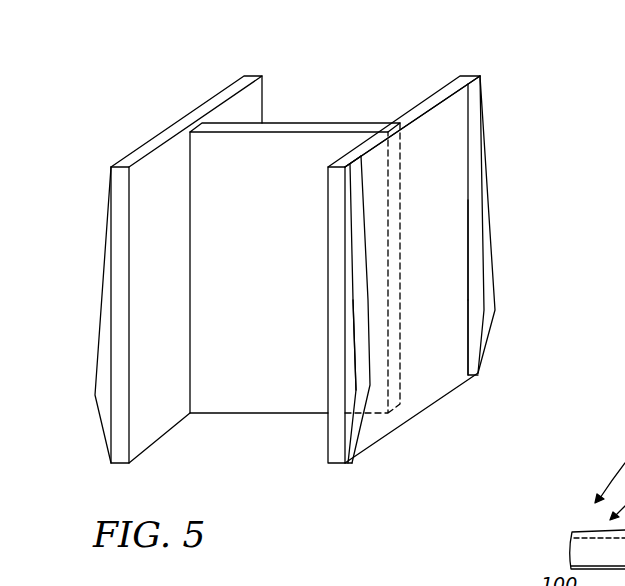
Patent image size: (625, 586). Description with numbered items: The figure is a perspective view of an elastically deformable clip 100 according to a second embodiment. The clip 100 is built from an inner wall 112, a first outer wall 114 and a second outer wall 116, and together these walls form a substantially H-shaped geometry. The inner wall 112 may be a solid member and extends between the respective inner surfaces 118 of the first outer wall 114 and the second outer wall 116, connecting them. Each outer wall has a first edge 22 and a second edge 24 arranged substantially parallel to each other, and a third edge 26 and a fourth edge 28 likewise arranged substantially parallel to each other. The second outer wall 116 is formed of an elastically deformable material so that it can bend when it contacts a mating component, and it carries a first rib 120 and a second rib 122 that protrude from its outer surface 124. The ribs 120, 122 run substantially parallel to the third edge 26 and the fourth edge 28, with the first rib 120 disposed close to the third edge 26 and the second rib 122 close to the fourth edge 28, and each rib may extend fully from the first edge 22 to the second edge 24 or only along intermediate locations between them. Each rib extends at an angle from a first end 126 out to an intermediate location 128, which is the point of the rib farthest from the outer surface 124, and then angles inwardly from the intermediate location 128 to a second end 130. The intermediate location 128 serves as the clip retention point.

The elastically deformable clip 100 is at (174, 88).
The first outer wall 114 is at (95, 284).
The inner surface 118 is at (155, 428).
The inner wall 112 is at (318, 118).
The first edge 22 is at (425, 108).
The third edge 26 is at (333, 450).
The fourth edge 28 is at (486, 97).
The first rib 120 is at (368, 307).
The second rib 122 is at (494, 235).
The first end 126 is at (358, 159).
The intermediate location 128 is at (358, 402).
The second end 130 is at (354, 464).
The second outer wall 116 is at (450, 302).
The outer surface 124 is at (437, 325).
The second edge 24 is at (378, 447).